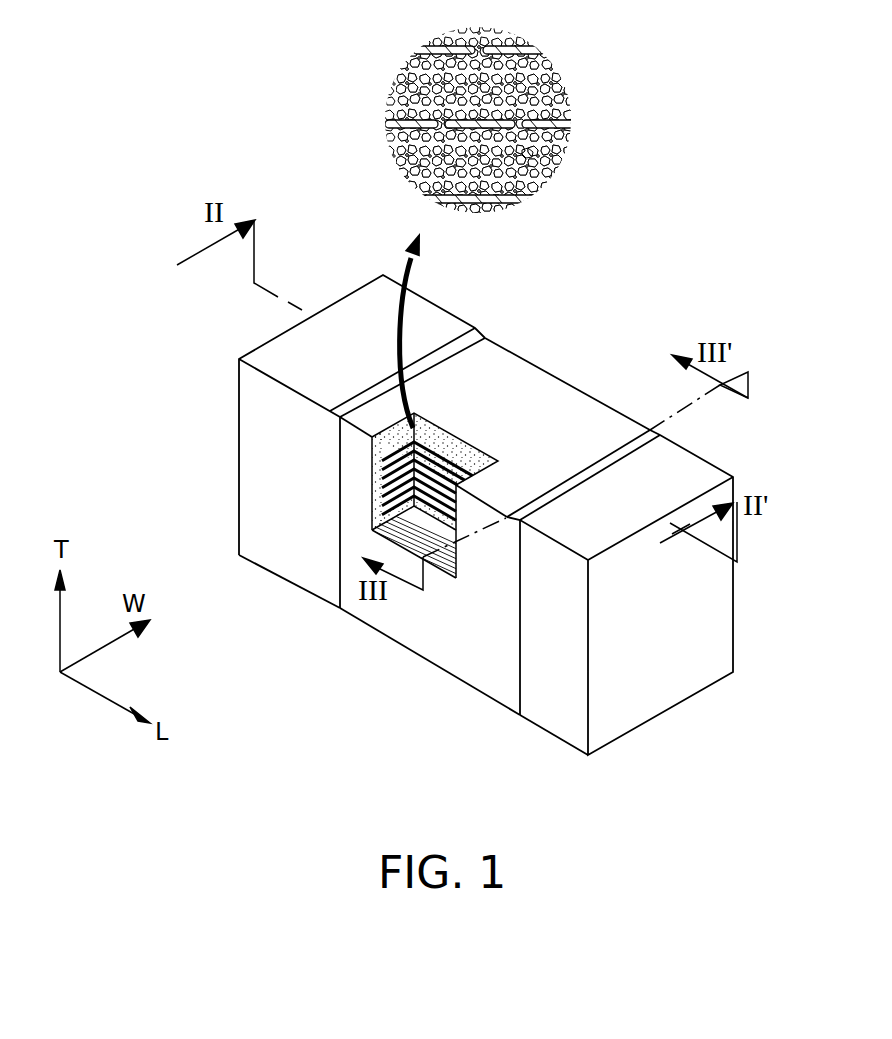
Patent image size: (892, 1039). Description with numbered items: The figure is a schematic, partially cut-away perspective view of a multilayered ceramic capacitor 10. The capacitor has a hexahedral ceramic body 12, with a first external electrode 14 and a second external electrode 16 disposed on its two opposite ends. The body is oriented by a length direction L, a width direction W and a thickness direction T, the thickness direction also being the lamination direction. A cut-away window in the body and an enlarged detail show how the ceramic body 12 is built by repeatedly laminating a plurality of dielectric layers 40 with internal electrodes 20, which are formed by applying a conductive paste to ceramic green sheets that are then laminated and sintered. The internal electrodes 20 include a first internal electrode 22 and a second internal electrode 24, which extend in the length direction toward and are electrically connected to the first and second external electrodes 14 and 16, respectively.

The multilayered ceramic capacitor 10 is at (147, 196).
The ceramic body 12 is at (498, 370).
The first external electrode 14 is at (231, 414).
The second external electrode 16 is at (669, 684).
The internal electrodes 20 is at (313, 25).
The first internal electrode 22 is at (423, 47).
The second internal electrode 24 is at (388, 124).
The dielectric layer 40 is at (528, 150).